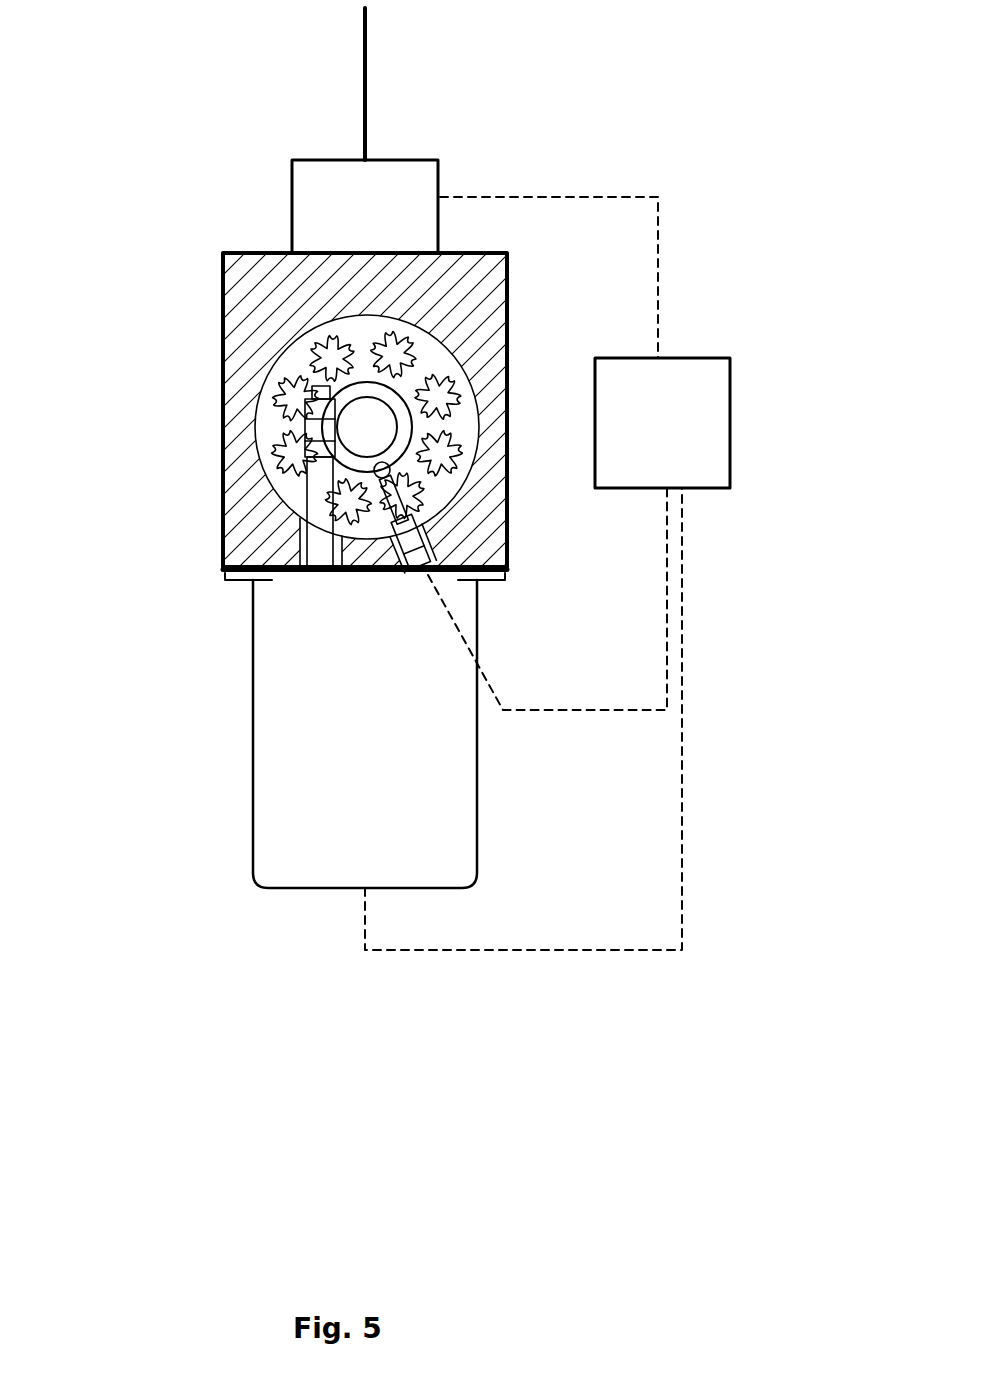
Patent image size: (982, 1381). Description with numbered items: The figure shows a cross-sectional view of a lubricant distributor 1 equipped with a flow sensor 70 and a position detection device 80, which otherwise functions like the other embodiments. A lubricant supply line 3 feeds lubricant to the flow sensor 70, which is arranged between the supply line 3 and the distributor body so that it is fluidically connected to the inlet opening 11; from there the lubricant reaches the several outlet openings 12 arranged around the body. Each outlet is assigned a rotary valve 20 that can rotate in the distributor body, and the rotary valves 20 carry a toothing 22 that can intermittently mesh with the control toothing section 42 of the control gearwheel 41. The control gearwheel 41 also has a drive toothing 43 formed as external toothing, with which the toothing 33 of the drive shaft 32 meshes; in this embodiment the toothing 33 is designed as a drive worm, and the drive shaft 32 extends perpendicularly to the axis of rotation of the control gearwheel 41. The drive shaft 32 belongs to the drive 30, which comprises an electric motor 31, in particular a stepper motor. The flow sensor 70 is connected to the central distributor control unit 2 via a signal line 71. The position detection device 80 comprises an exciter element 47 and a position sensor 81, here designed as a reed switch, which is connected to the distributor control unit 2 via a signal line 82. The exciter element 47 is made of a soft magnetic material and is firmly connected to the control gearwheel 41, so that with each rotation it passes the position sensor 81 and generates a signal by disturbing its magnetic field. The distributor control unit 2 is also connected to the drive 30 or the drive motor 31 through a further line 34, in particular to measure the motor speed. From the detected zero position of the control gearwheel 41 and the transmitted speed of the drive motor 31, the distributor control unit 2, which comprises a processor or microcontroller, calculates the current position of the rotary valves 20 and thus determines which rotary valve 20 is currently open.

The lubricant distributor 1 is at (135, 92).
The distributor control unit 2 is at (662, 423).
The lubricant supply line 3 is at (367, 120).
The inlet opening 11 is at (367, 252).
The outlet openings 12 is at (222, 298).
The rotary valve 20 is at (450, 365).
The toothing 22 is at (445, 460).
The drive 30 is at (264, 729).
The electric motor 31 is at (178, 593).
The drive shaft 32 is at (320, 538).
The toothing 33 is at (320, 430).
The sensor line 34 is at (662, 953).
The control gearwheel 41 is at (415, 380).
The control toothing section 42 is at (285, 375).
The drive toothing 43 is at (300, 487).
The exciter element 47 is at (428, 496).
The flow sensor 70 is at (315, 212).
The signal line 71 is at (648, 193).
The position detection device 80 is at (392, 476).
The position sensor 81 is at (420, 538).
The signal line 82 is at (605, 712).